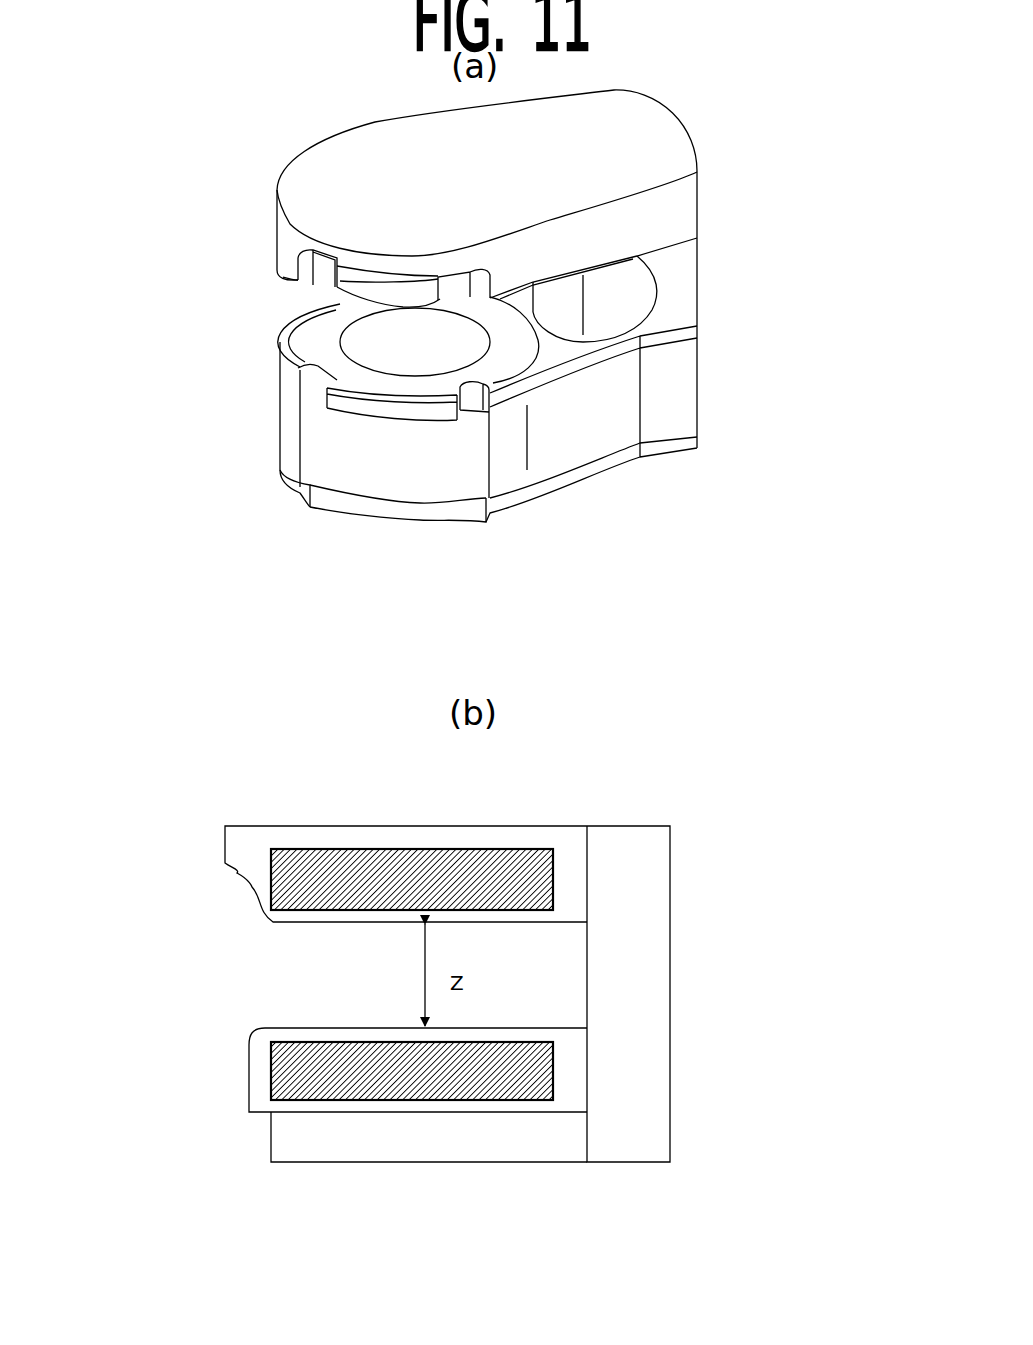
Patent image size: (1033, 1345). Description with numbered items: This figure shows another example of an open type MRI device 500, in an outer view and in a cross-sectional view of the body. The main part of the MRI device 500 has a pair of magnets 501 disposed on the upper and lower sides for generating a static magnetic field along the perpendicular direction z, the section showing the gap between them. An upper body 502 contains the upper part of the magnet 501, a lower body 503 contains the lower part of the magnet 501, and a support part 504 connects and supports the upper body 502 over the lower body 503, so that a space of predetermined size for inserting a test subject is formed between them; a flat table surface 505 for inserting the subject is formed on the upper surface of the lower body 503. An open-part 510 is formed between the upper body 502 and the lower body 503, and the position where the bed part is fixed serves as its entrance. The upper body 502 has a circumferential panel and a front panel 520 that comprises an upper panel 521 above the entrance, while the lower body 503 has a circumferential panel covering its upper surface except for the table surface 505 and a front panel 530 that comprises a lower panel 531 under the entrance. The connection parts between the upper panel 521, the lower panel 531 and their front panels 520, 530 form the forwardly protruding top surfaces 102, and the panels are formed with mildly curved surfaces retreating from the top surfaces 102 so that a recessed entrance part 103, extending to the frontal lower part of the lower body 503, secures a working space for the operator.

The MRI device 500 is at (719, 110).
The magnet 501 is at (545, 855).
The upper body 502 is at (392, 190).
The lower body 503 is at (560, 483).
The support part 504 is at (682, 285).
The table surface 505 is at (393, 331).
The open-part 510 is at (302, 321).
The front panel 520 is at (287, 233).
The upper panel 521 is at (347, 267).
The front panel 530 is at (588, 428).
The lower panel 531 is at (425, 460).
The top surface 102 is at (298, 268).
The entrance part 103 is at (362, 284).